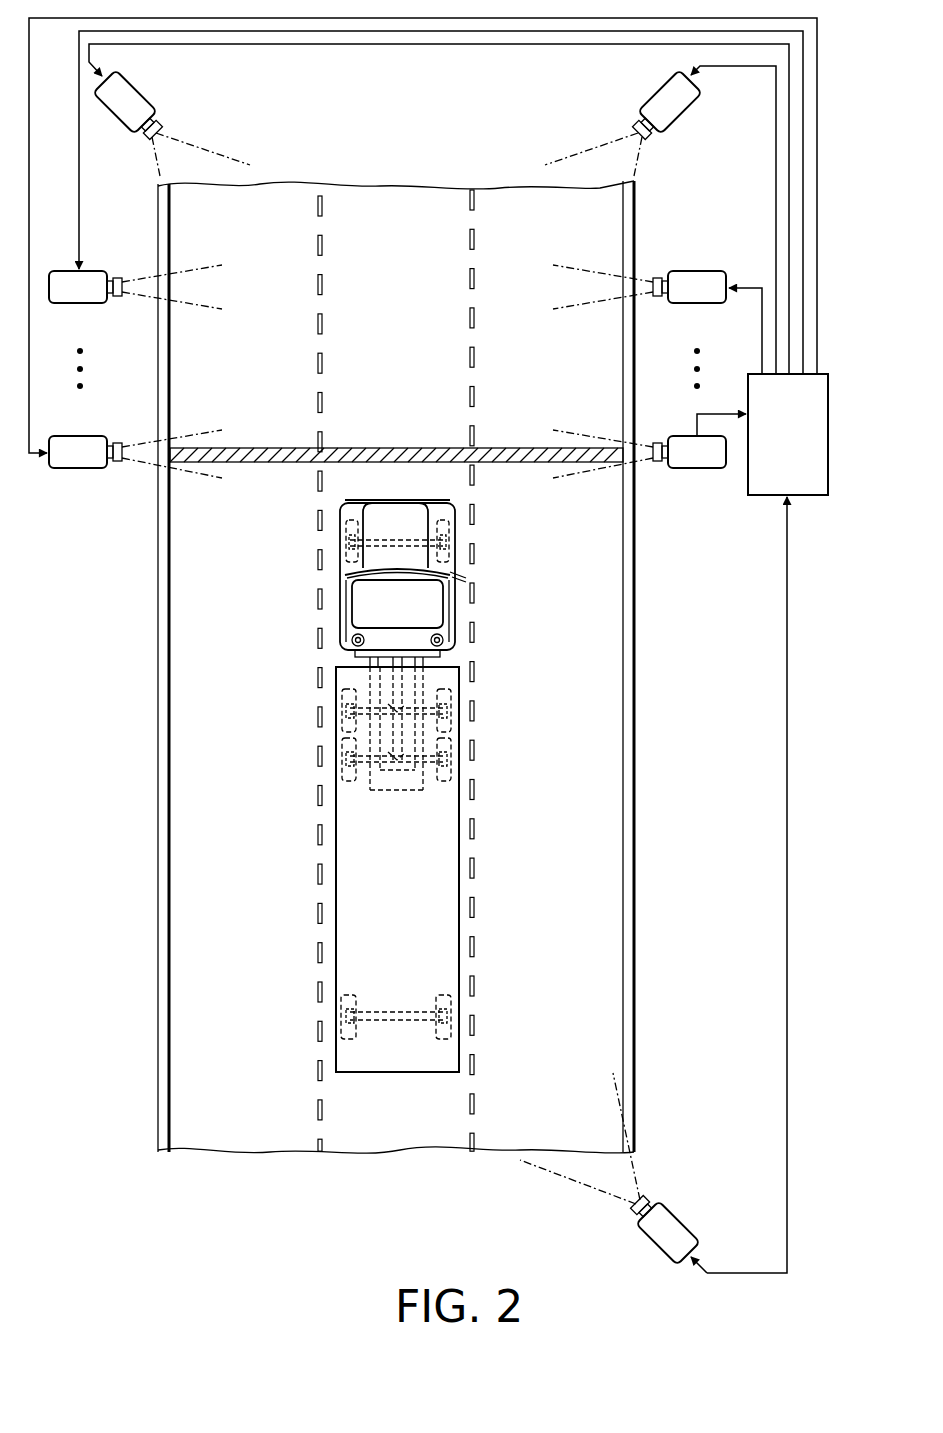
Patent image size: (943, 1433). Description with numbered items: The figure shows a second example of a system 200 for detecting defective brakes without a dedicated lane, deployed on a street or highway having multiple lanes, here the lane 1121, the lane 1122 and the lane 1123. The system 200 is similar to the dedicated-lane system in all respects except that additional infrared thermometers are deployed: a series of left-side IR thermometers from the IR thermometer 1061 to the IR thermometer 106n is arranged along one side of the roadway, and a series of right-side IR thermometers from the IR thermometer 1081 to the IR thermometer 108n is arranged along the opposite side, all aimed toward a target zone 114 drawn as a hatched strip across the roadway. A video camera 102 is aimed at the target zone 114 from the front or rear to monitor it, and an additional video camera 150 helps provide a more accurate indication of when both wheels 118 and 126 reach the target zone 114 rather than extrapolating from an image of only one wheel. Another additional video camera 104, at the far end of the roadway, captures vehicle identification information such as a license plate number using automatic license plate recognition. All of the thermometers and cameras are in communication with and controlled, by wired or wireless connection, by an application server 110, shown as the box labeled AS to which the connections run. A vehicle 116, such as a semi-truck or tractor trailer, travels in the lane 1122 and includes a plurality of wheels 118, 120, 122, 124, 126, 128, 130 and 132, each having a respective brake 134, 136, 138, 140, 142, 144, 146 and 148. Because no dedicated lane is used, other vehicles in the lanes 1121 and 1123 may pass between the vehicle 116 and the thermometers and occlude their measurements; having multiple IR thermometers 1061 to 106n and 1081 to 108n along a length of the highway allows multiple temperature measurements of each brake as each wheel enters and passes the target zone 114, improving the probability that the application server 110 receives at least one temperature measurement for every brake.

The system for detecting defective brakes without a dedicated lane 200 is at (115, 632).
The video camera 102 is at (680, 114).
The additional video camera 104 is at (650, 1244).
The IR thermometer 106n is at (94, 270).
The IR thermometer 1061 is at (76, 469).
The IR thermometer 108n is at (700, 270).
The IR thermometer 1081 is at (698, 469).
The application server 110 is at (763, 497).
The lane 1121 is at (265, 192).
The lane 1122 is at (400, 190).
The lane 1123 is at (530, 194).
The target zone 114 is at (507, 447).
The vehicle 116 is at (383, 573).
The wheel 118 is at (345, 510).
The wheel 120 is at (342, 694).
The wheel 122 is at (342, 770).
The wheel 124 is at (342, 1028).
The wheel 126 is at (450, 510).
The wheel 128 is at (452, 694).
The wheel 130 is at (452, 770).
The wheel 132 is at (452, 1028).
The brake 134 is at (348, 542).
The brake 136 is at (346, 711).
The brake 138 is at (346, 759).
The brake 140 is at (346, 1016).
The brake 142 is at (448, 542).
The brake 144 is at (448, 711).
The brake 146 is at (448, 759).
The brake 148 is at (448, 1016).
The additional video camera 150 is at (115, 114).